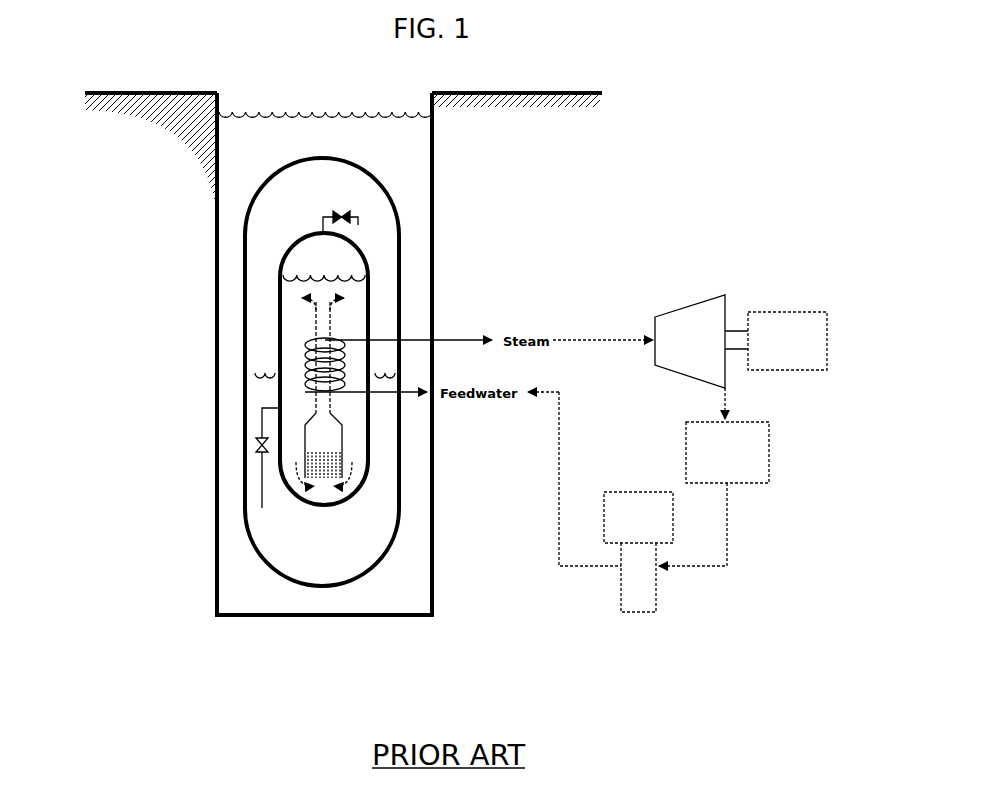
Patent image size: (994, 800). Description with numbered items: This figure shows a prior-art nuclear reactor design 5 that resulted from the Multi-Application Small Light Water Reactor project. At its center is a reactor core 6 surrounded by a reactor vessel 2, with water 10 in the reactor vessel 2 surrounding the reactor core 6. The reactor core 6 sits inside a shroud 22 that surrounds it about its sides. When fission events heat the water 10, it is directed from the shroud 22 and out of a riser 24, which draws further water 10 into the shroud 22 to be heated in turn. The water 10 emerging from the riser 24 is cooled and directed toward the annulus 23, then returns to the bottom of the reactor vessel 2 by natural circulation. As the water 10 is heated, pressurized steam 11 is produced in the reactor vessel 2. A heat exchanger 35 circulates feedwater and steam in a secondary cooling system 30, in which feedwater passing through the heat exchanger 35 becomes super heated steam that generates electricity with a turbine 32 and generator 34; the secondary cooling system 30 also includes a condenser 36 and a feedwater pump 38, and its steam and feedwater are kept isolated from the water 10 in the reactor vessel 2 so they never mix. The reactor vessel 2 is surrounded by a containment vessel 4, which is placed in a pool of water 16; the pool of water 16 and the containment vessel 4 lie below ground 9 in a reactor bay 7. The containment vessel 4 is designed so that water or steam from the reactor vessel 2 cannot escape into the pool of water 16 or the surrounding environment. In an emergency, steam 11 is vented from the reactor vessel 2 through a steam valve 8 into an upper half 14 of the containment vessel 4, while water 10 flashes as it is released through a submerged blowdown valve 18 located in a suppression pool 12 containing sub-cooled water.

The reactor vessel 2 is at (375, 288).
The containment vessel 4 is at (405, 243).
The nuclear reactor design 5 is at (231, 240).
The reactor core 6 is at (348, 456).
The reactor bay 7 is at (207, 533).
The steam valve 8 is at (352, 214).
The ground 9 is at (592, 103).
The water 10 is at (298, 287).
The pressurized steam 11 is at (316, 255).
The suppression pool 12 is at (325, 461).
The upper half of the containment vessel 14 is at (322, 203).
The pool of water 16 is at (325, 136).
The submerged blowdown valve 18 is at (255, 444).
The shroud 22 is at (345, 438).
The annulus 23 is at (340, 400).
The riser 24 is at (340, 325).
The secondary cooling system 30 is at (688, 288).
The turbine 32 is at (690, 341).
The generator 34 is at (787, 341).
The heat exchanger 35 is at (296, 358).
The condenser 36 is at (727, 452).
The feedwater pump 38 is at (638, 552).